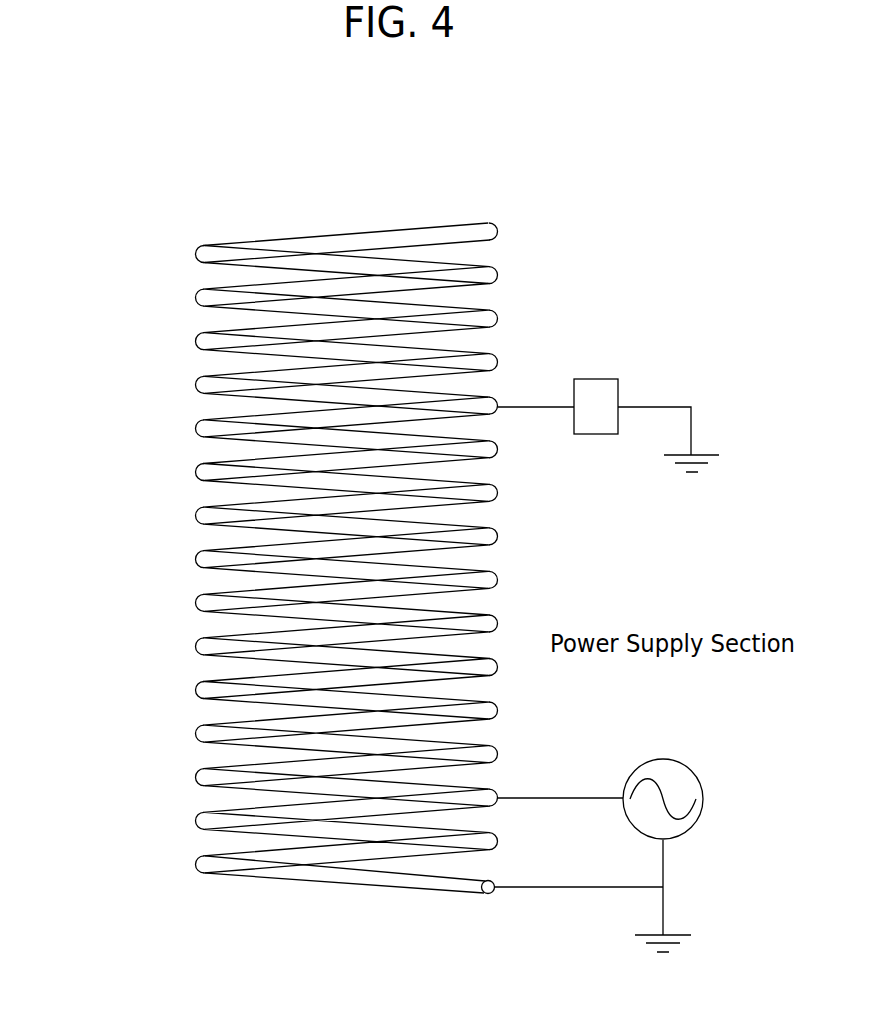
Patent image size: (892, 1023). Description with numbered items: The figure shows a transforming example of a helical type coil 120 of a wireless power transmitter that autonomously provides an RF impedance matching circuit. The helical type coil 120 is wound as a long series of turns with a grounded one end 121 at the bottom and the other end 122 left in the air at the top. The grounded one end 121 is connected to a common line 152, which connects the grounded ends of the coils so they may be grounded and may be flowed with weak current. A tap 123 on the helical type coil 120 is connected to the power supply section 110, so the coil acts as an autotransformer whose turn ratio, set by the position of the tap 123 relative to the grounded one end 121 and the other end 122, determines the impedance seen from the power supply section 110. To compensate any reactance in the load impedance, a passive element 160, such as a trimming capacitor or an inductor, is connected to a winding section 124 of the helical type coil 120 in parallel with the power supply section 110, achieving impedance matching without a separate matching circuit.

The power supply section 110 is at (662, 758).
The helical type coil 120 is at (172, 238).
The grounded one end 121 is at (489, 894).
The other end 122 is at (498, 231).
The tap 123 is at (495, 790).
The winding section 124 is at (495, 398).
The common line 152 is at (578, 888).
The passive element 160 is at (618, 379).